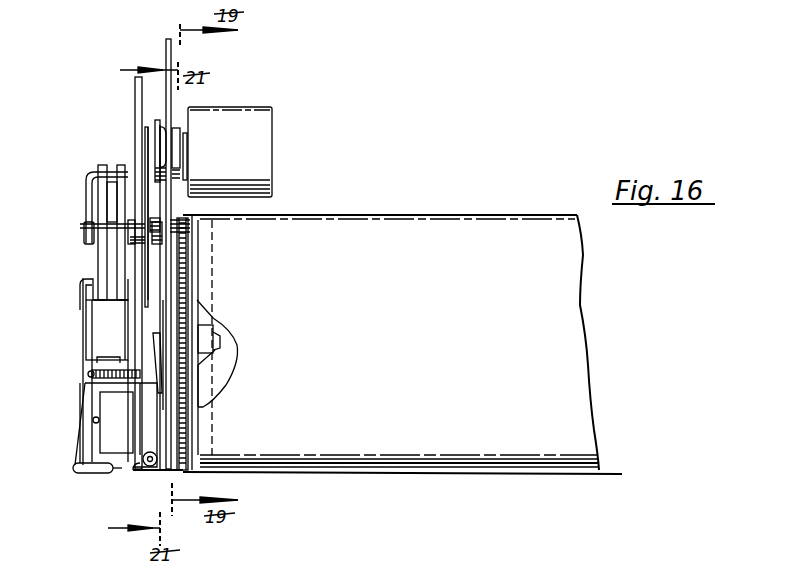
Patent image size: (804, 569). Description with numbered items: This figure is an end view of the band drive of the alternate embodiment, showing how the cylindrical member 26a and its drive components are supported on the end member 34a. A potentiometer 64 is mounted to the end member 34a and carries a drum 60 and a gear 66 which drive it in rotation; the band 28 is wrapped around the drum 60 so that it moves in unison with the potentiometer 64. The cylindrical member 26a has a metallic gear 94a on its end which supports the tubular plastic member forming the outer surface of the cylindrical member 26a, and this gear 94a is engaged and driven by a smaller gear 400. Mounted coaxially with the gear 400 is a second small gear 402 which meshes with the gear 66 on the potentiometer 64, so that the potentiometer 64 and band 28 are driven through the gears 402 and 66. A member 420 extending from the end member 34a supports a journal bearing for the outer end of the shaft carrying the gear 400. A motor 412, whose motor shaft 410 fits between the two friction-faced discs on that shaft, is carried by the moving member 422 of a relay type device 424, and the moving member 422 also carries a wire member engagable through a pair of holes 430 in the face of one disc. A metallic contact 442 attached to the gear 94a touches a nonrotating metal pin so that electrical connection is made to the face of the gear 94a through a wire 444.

The cylindrical member 26a is at (396, 220).
The end member 34a is at (166, 50).
The gear 66 is at (137, 118).
The drum 60 is at (150, 127).
The potentiometer 64 is at (252, 107).
The gear 94a is at (188, 262).
The smaller gear 400 is at (178, 216).
The member 420 is at (90, 177).
The second small gear 402 is at (130, 247).
The band 28 is at (145, 275).
The motor shaft 410 is at (95, 297).
The motor 412 is at (100, 327).
The wire 444 is at (150, 352).
The moving member 422 is at (82, 400).
The relay type device 424 is at (135, 467).
The holes 430 is at (226, 322).
The metallic contact 442 is at (228, 366).